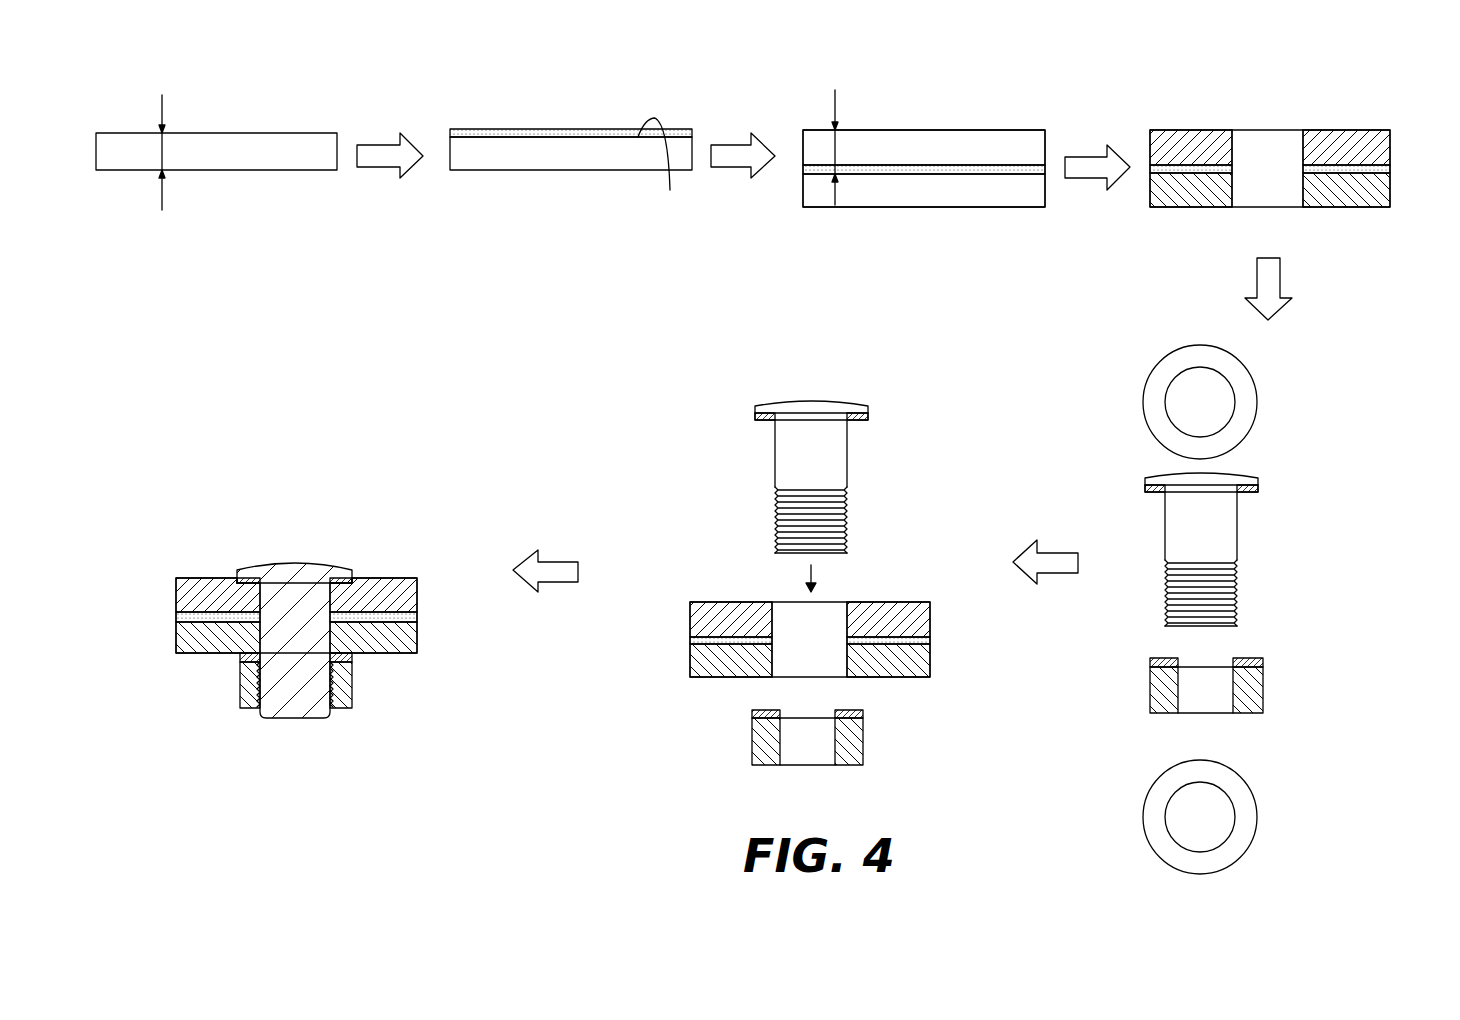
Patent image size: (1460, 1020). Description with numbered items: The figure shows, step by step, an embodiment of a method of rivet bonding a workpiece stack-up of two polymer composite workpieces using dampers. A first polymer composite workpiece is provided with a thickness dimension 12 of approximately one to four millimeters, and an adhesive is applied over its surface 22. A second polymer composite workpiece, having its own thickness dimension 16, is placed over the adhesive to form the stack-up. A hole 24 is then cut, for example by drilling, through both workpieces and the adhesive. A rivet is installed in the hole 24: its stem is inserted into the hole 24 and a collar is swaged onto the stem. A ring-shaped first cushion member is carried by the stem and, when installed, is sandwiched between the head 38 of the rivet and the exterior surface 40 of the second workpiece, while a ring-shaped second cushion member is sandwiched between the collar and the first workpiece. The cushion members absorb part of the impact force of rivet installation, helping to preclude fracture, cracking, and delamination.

The thickness dimension 12 is at (162, 148).
The thickness dimension 16 is at (838, 147).
The surface 22 is at (659, 168).
The hole 24 is at (1303, 150).
The head 38 is at (265, 568).
The exterior surface 40 is at (192, 578).